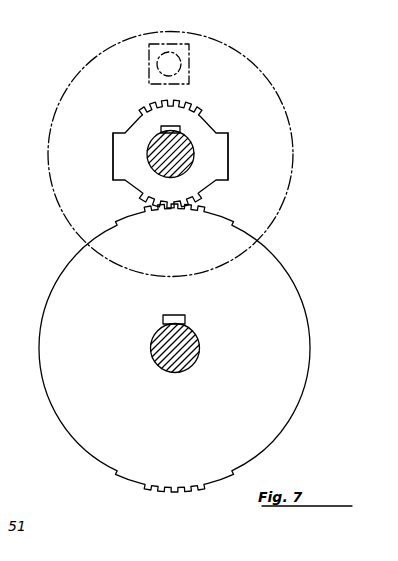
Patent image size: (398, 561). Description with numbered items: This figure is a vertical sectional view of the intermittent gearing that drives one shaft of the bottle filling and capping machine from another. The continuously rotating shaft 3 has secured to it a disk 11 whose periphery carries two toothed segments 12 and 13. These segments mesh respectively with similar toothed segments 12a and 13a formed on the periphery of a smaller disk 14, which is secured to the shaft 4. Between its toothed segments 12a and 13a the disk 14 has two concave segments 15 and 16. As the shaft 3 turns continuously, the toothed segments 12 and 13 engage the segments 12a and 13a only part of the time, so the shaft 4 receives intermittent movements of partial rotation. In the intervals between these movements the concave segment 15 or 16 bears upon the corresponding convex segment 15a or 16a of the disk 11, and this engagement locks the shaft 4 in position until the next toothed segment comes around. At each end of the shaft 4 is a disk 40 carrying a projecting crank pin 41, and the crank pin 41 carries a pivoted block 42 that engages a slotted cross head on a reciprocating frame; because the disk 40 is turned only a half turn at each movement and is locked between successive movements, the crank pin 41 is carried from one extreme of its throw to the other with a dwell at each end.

The shaft 3 is at (180, 348).
The shaft 4 is at (178, 156).
The disk 11 is at (174, 348).
The toothed segment 12 is at (174, 224).
The toothed segment 12a is at (170, 200).
The toothed segment 13 is at (174, 475).
The toothed segment 13a is at (168, 120).
The disk 14 is at (208, 131).
The concave segment 15 is at (113, 152).
The concave segment 16 is at (228, 152).
The convex segment 15a is at (39, 350).
The convex segment 16a is at (311, 340).
The disk 40 is at (92, 68).
The crank pin 41 is at (158, 77).
The pivoted block 42 is at (189, 72).